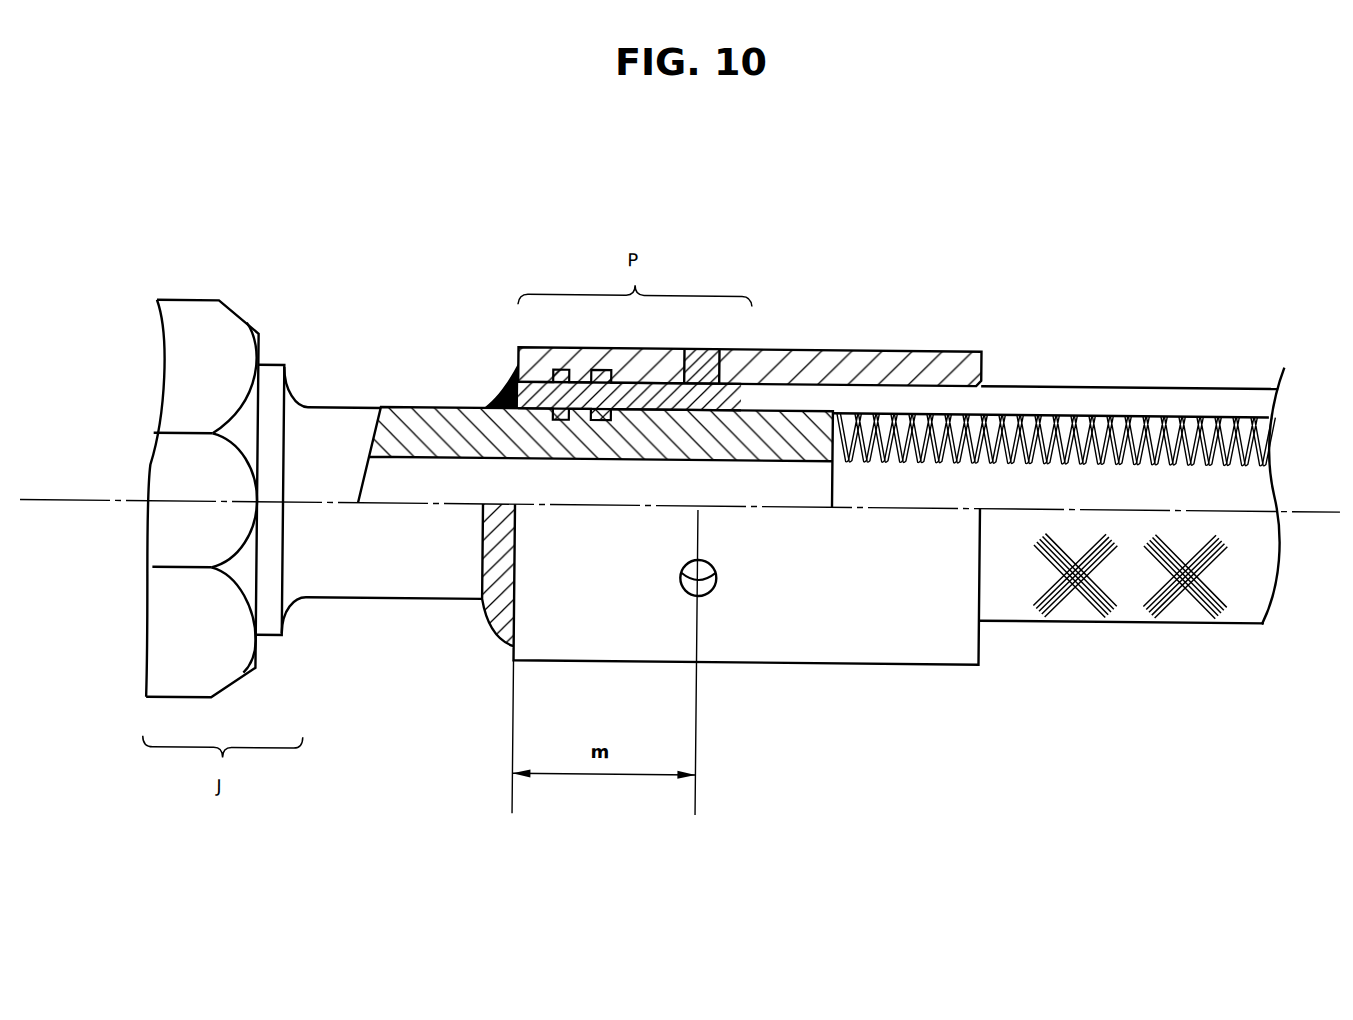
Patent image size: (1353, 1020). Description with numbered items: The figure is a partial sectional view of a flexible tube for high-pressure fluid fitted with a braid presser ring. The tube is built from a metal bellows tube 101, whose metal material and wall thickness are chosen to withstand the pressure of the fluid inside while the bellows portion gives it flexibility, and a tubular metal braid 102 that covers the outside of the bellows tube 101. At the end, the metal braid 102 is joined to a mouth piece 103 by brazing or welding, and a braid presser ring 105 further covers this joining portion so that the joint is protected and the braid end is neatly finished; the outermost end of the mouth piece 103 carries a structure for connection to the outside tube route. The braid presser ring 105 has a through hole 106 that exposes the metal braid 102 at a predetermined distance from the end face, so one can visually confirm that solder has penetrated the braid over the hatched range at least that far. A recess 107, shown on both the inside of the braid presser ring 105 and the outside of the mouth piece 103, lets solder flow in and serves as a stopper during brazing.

The metal bellows tube 101 is at (1057, 418).
The tubular metal braid 102 is at (1163, 396).
The mouth piece 103 is at (403, 590).
The braid presser ring 105 is at (829, 351).
The through hole 106 is at (713, 366).
The recess 107 is at (560, 369).